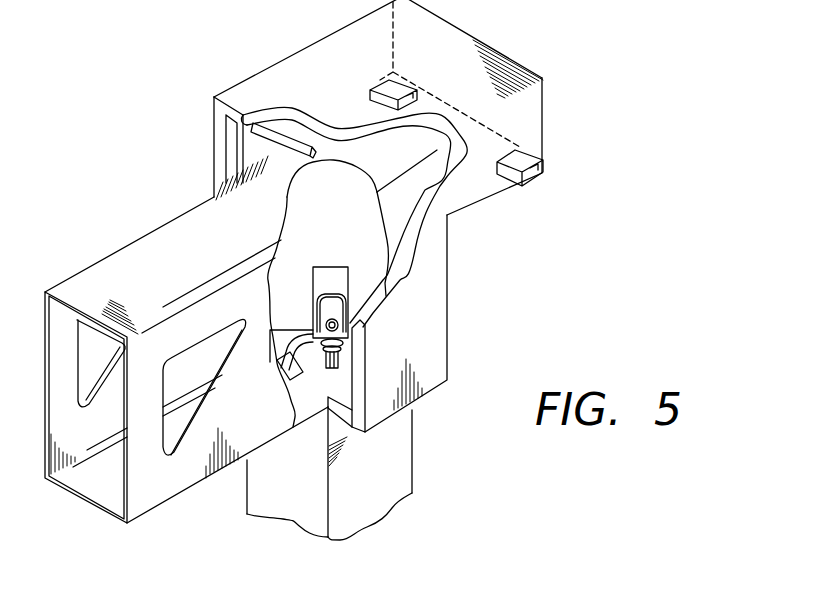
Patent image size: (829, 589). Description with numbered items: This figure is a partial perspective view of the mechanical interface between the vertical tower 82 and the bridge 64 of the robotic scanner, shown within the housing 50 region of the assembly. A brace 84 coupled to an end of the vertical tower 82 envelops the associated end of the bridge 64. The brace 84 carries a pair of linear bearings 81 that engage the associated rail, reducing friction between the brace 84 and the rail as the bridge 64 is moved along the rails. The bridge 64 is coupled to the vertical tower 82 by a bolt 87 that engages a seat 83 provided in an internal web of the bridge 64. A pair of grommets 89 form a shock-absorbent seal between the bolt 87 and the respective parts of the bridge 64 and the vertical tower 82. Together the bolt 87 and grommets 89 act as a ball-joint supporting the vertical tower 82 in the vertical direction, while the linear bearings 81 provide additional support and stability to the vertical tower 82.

The housing 50 is at (379, 107).
The linear bearings 81 is at (383, 91).
The seat 83 is at (313, 304).
The bridge 64 is at (125, 273).
The grommets 89 is at (322, 308).
The brace 84 is at (433, 352).
The bolt 87 is at (403, 409).
The vertical tower 82 is at (370, 503).